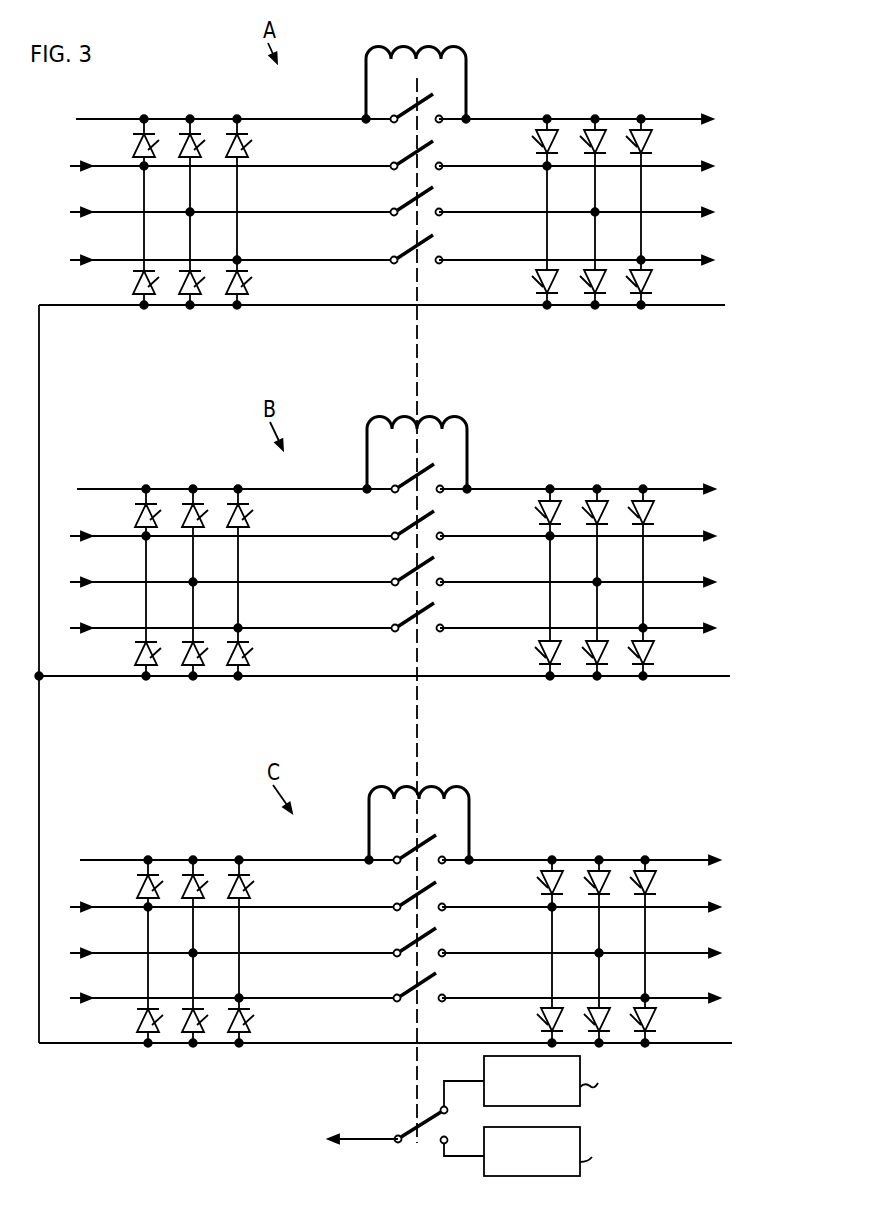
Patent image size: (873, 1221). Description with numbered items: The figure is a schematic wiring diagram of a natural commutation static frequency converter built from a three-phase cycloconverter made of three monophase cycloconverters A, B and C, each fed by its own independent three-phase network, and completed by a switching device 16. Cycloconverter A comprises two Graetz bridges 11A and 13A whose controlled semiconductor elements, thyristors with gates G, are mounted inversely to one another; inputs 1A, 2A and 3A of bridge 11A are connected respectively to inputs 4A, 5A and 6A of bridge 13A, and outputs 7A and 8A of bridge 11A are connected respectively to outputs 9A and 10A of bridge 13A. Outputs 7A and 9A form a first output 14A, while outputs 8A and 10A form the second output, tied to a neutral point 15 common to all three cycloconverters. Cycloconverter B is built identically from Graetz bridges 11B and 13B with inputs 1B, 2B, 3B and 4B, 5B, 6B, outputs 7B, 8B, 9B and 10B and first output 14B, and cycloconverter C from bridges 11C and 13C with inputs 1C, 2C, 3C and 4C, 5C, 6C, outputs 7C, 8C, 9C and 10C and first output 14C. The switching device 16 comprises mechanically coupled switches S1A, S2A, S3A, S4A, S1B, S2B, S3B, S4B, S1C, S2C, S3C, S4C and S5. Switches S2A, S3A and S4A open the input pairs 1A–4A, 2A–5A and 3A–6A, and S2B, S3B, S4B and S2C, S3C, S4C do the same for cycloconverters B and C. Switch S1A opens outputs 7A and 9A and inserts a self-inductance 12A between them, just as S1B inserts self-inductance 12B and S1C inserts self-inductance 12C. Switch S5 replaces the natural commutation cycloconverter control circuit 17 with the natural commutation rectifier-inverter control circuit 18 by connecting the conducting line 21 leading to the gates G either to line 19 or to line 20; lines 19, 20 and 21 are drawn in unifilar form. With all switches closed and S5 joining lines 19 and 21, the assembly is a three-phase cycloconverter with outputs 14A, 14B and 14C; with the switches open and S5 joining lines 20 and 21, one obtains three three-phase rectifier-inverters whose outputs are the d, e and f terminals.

The input of Graetz bridge 11A 1A is at (277, 166).
The input of Graetz bridge 11A 2A is at (277, 212).
The input of Graetz bridge 11A 3A is at (277, 260).
The input of Graetz bridge 13A 4A is at (510, 165).
The input of Graetz bridge 13A 5A is at (510, 211).
The input of Graetz bridge 13A 6A is at (510, 259).
The output of Graetz bridge 11A 7A is at (270, 118).
The output of Graetz bridge 11A 8A is at (284, 304).
The output of Graetz bridge 13A 9A is at (572, 118).
The output of Graetz bridge 13A 10A is at (512, 304).
The Graetz bridge 11A is at (206, 112).
The self-inductance 12A is at (394, 46).
The Graetz bridge 13A is at (590, 107).
The first output of monophase cycloconverter A 14A is at (688, 118).
The input of Graetz bridge 11B 1B is at (278, 536).
The input of Graetz bridge 11B 2B is at (278, 582).
The input of Graetz bridge 11B 3B is at (278, 628).
The input of Graetz bridge 13B 4B is at (507, 535).
The input of Graetz bridge 13B 5B is at (507, 581).
The input of Graetz bridge 13B 6B is at (507, 627).
The output of Graetz bridge 11B 7B is at (264, 488).
The output of Graetz bridge 11B 8B is at (294, 675).
The output of Graetz bridge 13B 9B is at (577, 488).
The output of Graetz bridge 13B 10B is at (512, 675).
The Graetz bridge 11B is at (208, 482).
The self-inductance 12B is at (370, 424).
The Graetz bridge 13B is at (595, 475).
The first output of monophase cycloconverter B 14B is at (700, 488).
The input of Graetz bridge 11C 1C is at (278, 907).
The input of Graetz bridge 11C 2C is at (278, 953).
The input of Graetz bridge 11C 3C is at (278, 998).
The input of Graetz bridge 13C 4C is at (515, 906).
The input of Graetz bridge 13C 5C is at (515, 952).
The input of Graetz bridge 13C 6C is at (515, 997).
The output of Graetz bridge 11C 7C is at (262, 859).
The output of Graetz bridge 11C 8C is at (298, 1042).
The output of Graetz bridge 13C 9C is at (578, 858).
The output of Graetz bridge 13C 10C is at (517, 1042).
The Graetz bridge 11C is at (210, 850).
The self-inductance 12C is at (383, 790).
The Graetz bridge 13C is at (593, 850).
The first output of monophase cycloconverter C 14C is at (688, 859).
The neutral point 15 is at (43, 680).
The switching device 16 is at (427, 84).
The natural commutation cycloconverter control circuit 17 is at (533, 1166).
The natural commutation rectifier-inverter control circuit 18 is at (532, 1091).
The conducting line 19 is at (467, 1155).
The conducting line 20 is at (466, 1080).
The conducting line 21 is at (360, 1139).
The switch S1A is at (394, 115).
The switch S2A is at (394, 164).
The switch S3A is at (394, 210).
The switch S4A is at (394, 258).
The switch S1B is at (395, 485).
The switch S2B is at (395, 534).
The switch S3B is at (395, 580).
The switch S4B is at (395, 626).
The switch S1C is at (397, 856).
The switch S2C is at (397, 905).
The switch S3C is at (397, 951).
The switch S4C is at (397, 996).
The switch S5 is at (410, 1137).